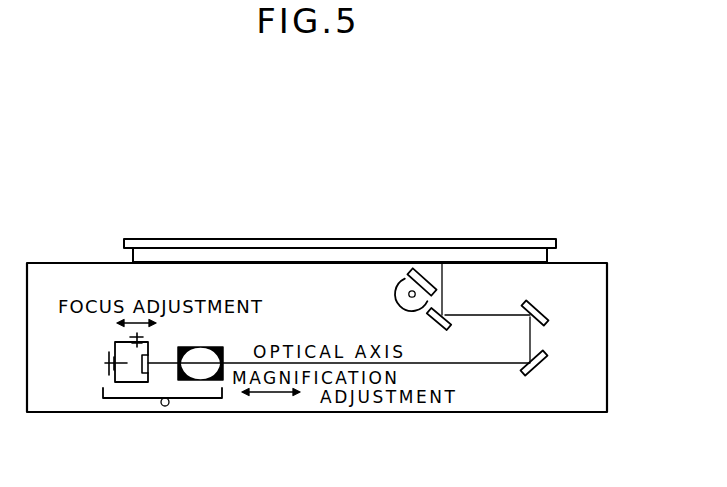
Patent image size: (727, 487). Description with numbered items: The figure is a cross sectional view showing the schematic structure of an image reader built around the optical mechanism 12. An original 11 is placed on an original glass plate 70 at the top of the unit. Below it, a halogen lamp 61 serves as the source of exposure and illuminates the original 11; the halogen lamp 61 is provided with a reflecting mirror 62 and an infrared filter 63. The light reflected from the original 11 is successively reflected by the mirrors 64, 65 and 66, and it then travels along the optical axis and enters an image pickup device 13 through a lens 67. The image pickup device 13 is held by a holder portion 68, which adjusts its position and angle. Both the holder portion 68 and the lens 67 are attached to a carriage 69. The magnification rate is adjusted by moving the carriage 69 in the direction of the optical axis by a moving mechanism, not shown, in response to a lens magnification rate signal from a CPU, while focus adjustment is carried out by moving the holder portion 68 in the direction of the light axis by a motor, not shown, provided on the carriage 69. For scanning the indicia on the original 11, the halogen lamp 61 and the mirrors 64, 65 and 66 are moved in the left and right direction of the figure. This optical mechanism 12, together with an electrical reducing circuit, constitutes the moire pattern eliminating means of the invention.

The original 11 is at (359, 255).
The optical mechanism 12 is at (309, 395).
The image pickup device 13 is at (140, 374).
The halogen lamp 61 is at (410, 299).
The reflecting mirror 62 is at (396, 293).
The infrared filter 63 is at (428, 270).
The mirror 64 is at (437, 322).
The mirror 65 is at (542, 313).
The mirror 66 is at (548, 357).
The lens 67 is at (199, 372).
The holder portion 68 is at (112, 372).
The carriage 69 is at (214, 399).
The original glass plate 70 is at (318, 262).